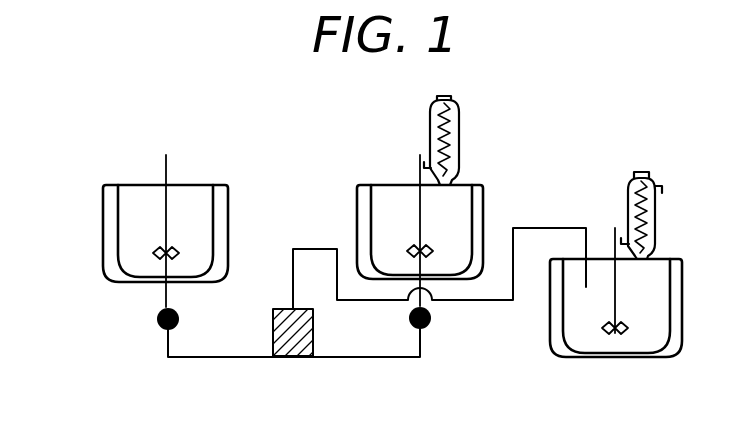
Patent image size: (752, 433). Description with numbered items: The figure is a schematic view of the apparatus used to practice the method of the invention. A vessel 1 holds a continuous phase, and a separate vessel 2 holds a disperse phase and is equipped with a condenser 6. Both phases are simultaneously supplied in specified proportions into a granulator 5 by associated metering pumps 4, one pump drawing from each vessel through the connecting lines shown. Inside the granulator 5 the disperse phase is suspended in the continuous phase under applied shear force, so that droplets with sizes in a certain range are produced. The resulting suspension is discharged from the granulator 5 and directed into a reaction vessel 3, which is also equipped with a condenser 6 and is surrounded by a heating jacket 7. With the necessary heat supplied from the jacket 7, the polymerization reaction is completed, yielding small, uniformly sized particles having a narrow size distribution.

The vessel 1 is at (192, 195).
The vessel 2 is at (462, 190).
The reaction vessel 3 is at (634, 322).
The metering pump 4 is at (160, 330).
The granulator 5 is at (293, 358).
The condenser 6 is at (460, 128).
The heating jacket 7 is at (668, 359).